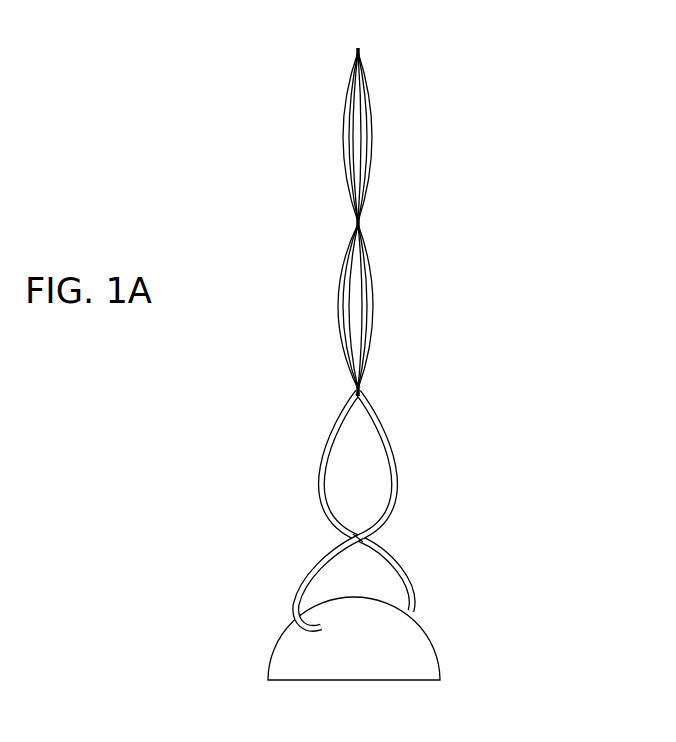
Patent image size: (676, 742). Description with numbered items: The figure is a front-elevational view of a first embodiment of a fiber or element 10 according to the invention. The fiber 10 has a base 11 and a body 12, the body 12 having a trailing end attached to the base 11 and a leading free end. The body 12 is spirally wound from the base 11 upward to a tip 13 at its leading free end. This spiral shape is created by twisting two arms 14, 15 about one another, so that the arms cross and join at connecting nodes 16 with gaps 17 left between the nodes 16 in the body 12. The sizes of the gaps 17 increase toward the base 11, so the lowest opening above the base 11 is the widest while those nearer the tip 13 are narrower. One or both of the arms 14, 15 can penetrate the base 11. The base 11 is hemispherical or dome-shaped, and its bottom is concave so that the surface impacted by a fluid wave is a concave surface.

The fiber 10 is at (393, 351).
The base 11 is at (421, 648).
The body 12 is at (355, 325).
The tip 13 is at (358, 53).
The arm 14 is at (323, 566).
The arm 15 is at (393, 560).
The connecting nodes 16 is at (357, 223).
The gaps 17 is at (357, 137).